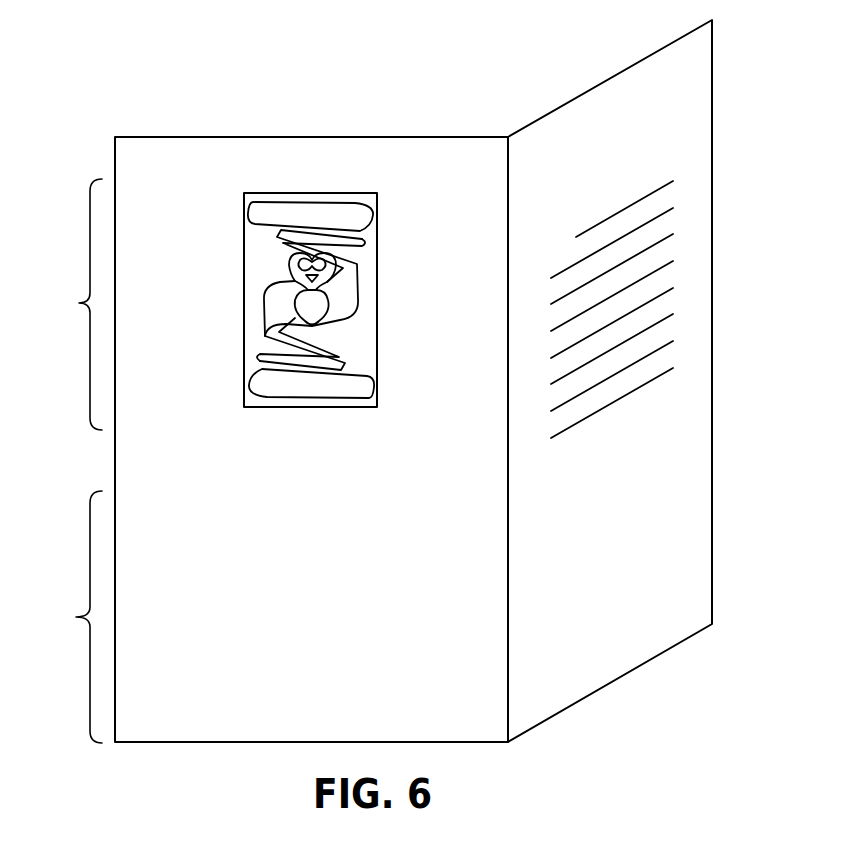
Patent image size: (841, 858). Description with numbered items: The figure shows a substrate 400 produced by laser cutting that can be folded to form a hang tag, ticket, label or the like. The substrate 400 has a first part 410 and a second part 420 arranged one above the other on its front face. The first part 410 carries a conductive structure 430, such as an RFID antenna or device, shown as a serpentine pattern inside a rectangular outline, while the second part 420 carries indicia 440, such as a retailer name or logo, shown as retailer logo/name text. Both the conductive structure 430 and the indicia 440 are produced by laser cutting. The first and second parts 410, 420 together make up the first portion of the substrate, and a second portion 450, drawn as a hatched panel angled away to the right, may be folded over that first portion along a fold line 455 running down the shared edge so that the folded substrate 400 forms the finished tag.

The substrate 400 is at (110, 124).
The first part 410 is at (65, 304).
The second part 420 is at (63, 617).
The conductive structure 430 is at (309, 192).
The indicia 440 is at (325, 510).
The second portion 450 is at (702, 127).
The fold line 455 is at (507, 135).